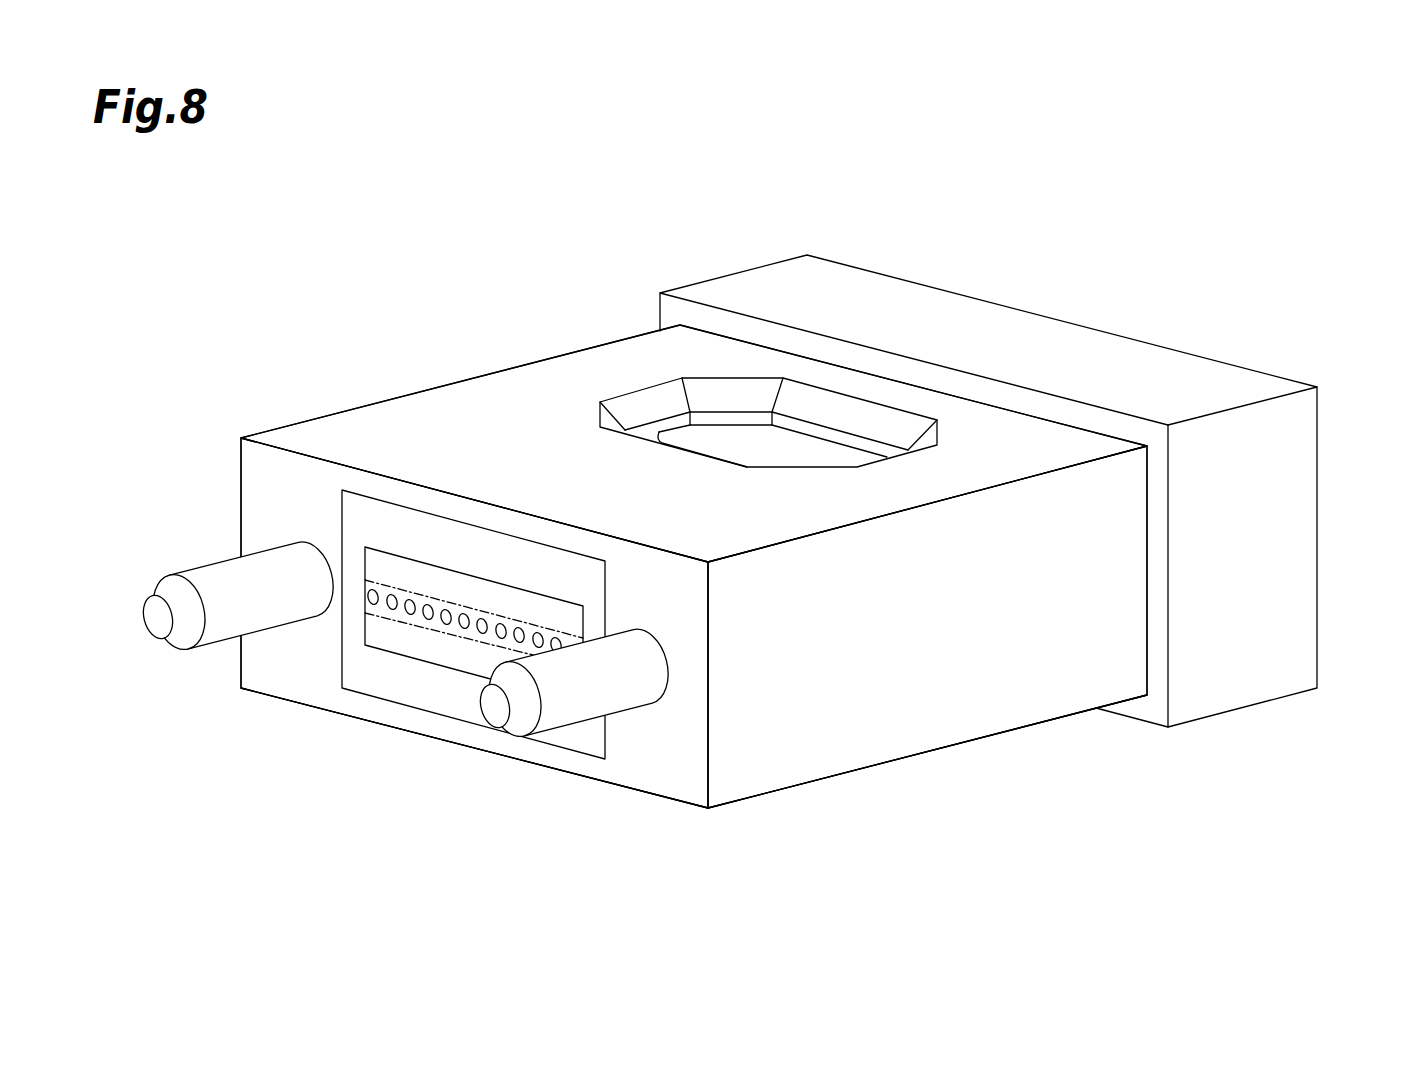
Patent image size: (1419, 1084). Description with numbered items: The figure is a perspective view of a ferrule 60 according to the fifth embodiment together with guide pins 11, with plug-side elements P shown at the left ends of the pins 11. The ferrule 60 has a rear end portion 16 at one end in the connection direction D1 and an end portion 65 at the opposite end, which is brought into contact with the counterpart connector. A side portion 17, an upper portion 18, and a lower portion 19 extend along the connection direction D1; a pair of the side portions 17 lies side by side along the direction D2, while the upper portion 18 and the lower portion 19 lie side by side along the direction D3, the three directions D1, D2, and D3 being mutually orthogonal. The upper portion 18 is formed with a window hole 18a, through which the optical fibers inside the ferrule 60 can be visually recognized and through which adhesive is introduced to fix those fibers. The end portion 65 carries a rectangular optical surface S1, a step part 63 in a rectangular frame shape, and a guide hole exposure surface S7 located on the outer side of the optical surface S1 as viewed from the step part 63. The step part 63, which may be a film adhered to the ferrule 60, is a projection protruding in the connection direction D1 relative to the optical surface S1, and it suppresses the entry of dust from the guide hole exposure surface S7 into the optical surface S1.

The ferrule 60 is at (589, 226).
The upper portion 18 is at (549, 368).
The window hole 18a is at (806, 428).
The rear end portion 16 is at (1320, 453).
The side portion 17 is at (1037, 693).
The lower portion 19 is at (806, 786).
The step part 63 is at (385, 683).
The end portion 65 is at (414, 758).
The optical surface S1 is at (425, 593).
The guide hole exposure surface S7 is at (670, 713).
The cylindrical connector 11 is at (320, 592).
The plug pin P is at (157, 622).
The connection direction D1 is at (987, 785).
The direction D2 is at (1225, 315).
The direction D3 is at (1370, 520).